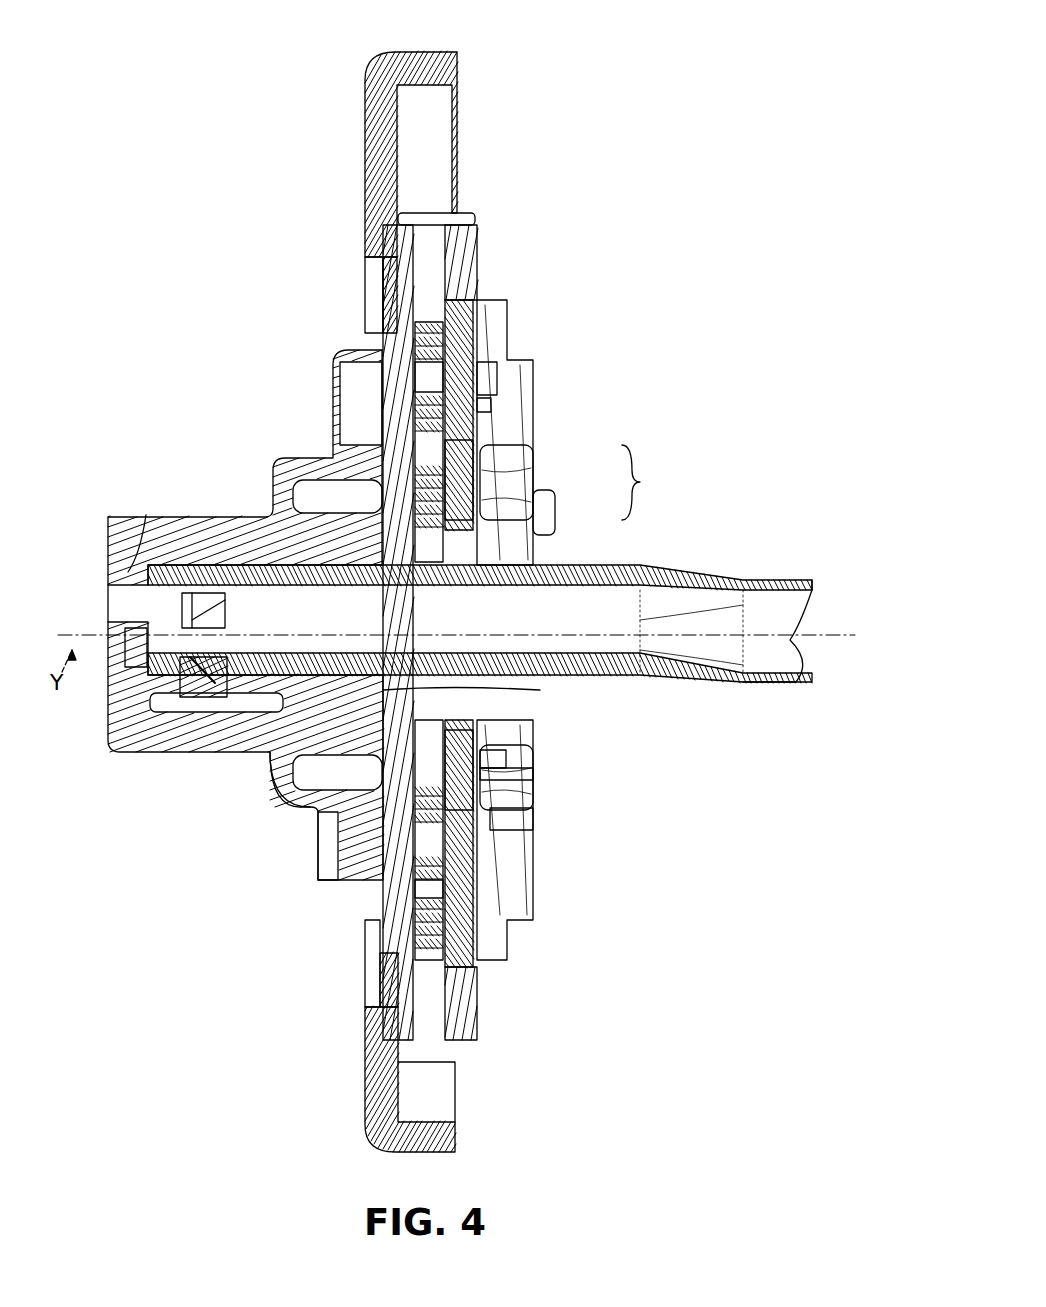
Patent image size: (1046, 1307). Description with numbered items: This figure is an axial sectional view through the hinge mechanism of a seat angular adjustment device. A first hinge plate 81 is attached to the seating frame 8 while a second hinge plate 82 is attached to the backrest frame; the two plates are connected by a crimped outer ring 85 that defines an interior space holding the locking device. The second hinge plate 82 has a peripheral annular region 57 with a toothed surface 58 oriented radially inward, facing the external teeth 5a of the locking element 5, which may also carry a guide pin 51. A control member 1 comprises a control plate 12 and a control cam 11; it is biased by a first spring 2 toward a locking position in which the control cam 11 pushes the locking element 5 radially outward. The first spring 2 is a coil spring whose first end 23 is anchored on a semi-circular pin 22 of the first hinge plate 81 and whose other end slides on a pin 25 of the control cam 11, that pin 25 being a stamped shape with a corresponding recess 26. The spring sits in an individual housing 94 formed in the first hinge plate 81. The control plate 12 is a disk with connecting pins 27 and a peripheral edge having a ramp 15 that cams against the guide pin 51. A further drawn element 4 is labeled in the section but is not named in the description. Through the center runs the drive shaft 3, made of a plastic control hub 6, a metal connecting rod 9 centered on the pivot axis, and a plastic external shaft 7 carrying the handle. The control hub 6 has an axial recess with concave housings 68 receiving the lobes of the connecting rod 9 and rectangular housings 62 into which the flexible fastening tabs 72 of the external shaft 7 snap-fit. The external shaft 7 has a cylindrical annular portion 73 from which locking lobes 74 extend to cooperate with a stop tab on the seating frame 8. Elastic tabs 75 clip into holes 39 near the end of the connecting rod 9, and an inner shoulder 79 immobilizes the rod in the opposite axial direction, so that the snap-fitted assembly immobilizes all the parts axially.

The control member 1 is at (639, 482).
The first spring 2 is at (430, 905).
The drive shaft 3 is at (783, 706).
The inner shaft 4 is at (456, 345).
The locking element 5 is at (482, 343).
The external teeth 5a is at (476, 300).
The control hub 6 is at (410, 708).
The external shaft 7 is at (258, 465).
The seating frame 8 is at (358, 98).
The connecting rod 9 is at (718, 578).
The control cam 11 is at (460, 492).
The control plate 12 is at (505, 474).
The ramp 15 is at (486, 380).
The pin 22 is at (420, 388).
The first end 23 is at (414, 340).
The pin 25 is at (506, 808).
The recess 26 is at (482, 760).
The connecting pin 27 is at (520, 779).
The hole 39 is at (186, 612).
The guide pin 51 is at (492, 398).
The peripheral annular region 57 is at (480, 245).
The toothed surface 58 is at (483, 300).
The rectangular housing 62 is at (430, 735).
The concave housing 68 is at (492, 565).
The fastening tab 72 is at (525, 690).
The annular portion 73 is at (290, 468).
The locking lobe 74 is at (328, 872).
The elastic tab 75 is at (200, 662).
The inner shoulder 79 is at (128, 572).
The first hinge plate 81 is at (372, 392).
The second hinge plate 82 is at (548, 398).
The outer ring 85 is at (483, 214).
The housing 94 is at (428, 420).